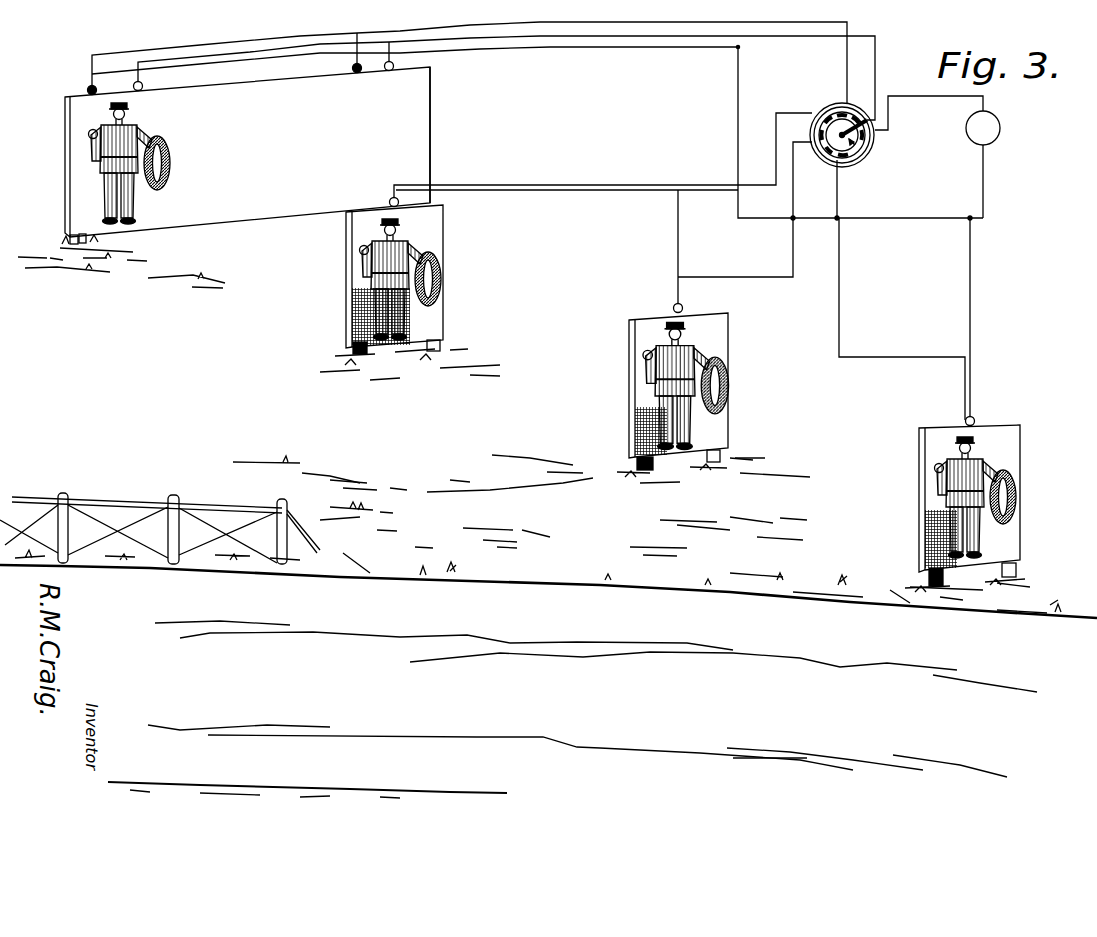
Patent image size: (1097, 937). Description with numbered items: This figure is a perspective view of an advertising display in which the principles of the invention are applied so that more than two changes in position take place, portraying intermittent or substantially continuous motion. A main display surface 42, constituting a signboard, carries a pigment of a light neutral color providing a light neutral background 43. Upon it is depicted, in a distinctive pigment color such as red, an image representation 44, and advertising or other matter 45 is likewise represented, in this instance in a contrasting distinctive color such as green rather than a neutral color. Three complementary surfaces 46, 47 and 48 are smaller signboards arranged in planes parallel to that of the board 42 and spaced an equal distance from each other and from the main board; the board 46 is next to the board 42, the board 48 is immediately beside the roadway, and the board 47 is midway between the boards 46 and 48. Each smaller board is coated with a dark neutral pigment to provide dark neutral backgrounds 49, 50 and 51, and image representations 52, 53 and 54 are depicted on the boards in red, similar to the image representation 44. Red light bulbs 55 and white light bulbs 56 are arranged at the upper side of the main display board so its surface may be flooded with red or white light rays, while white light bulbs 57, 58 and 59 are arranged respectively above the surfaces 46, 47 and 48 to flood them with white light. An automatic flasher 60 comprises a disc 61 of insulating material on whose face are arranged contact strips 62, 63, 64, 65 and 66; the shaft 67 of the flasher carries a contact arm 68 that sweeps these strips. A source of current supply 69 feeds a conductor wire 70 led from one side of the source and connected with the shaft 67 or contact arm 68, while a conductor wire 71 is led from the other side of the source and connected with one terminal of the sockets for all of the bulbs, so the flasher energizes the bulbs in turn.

The main display surface 42 is at (417, 132).
The light neutral background 43 is at (427, 93).
The image representation 44 is at (133, 188).
The advertising matter 45 is at (358, 103).
The complementary surface 46 is at (397, 255).
The complementary surface 47 is at (683, 378).
The complementary surface 48 is at (971, 491).
The dark neutral background 49 is at (438, 323).
The dark neutral background 50 is at (720, 427).
The dark neutral background 51 is at (1015, 540).
The image representation 52 is at (380, 280).
The image representation 53 is at (672, 385).
The image representation 54 is at (950, 495).
The red light bulbs 55 is at (87, 88).
The white light bulbs 56 is at (143, 85).
The white light bulb 57 is at (390, 200).
The white light bulb 58 is at (682, 306).
The white light bulb 59 is at (974, 418).
The automatic flasher 60 is at (866, 158).
The disc 61 is at (831, 154).
The contact strip 62 is at (868, 143).
The contact strip 63 is at (853, 115).
The contact strip 64 is at (840, 113).
The contact strip 65 is at (820, 134).
The contact strip 66 is at (845, 156).
The shaft 67 is at (826, 119).
The contact arm 68 is at (878, 119).
The source of current supply 69 is at (1001, 128).
The conductor wire 70 is at (938, 97).
The conductor wire 71 is at (984, 187).